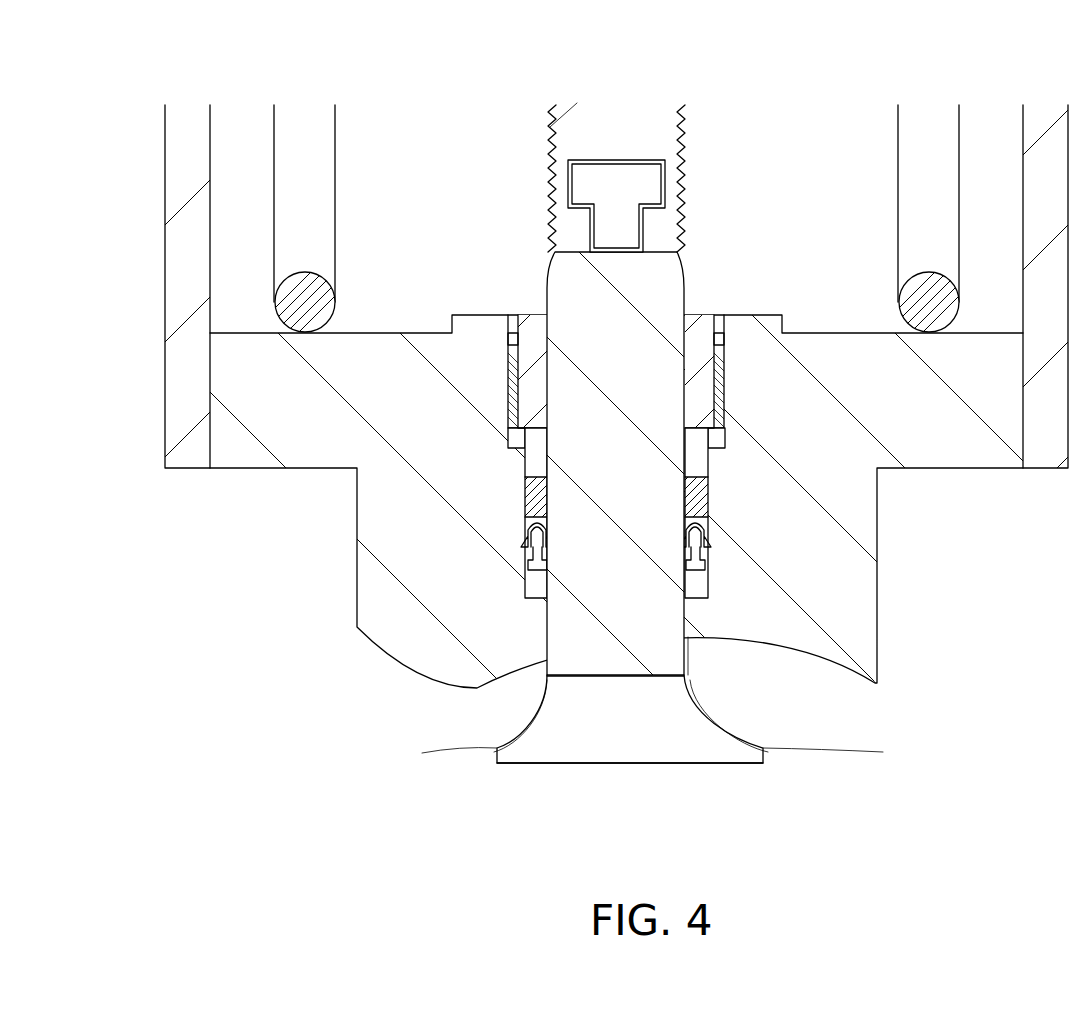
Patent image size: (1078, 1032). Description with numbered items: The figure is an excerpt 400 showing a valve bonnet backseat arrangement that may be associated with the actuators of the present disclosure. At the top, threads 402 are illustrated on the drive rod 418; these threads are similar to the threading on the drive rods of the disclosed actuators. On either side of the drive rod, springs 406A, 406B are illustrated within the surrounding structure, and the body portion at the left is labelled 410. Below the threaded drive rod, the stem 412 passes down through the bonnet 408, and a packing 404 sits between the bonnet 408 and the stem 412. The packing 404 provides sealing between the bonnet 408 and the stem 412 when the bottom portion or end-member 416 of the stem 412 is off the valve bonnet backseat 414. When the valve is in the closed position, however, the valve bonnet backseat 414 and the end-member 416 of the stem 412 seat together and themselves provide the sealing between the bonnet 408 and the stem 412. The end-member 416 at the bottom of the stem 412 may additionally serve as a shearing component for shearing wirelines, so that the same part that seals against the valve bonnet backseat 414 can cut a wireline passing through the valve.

The excerpt 400 is at (1021, 71).
The threads 402 is at (548, 143).
The packing 404 is at (517, 367).
The spring 406A is at (328, 135).
The spring 406B is at (925, 130).
The bonnet 408 is at (470, 532).
The valve body 410 is at (183, 457).
The stem 412 is at (575, 432).
The valve bonnet backseat 414 is at (540, 705).
The end-member 416 is at (587, 750).
The drive rod 418 is at (652, 125).